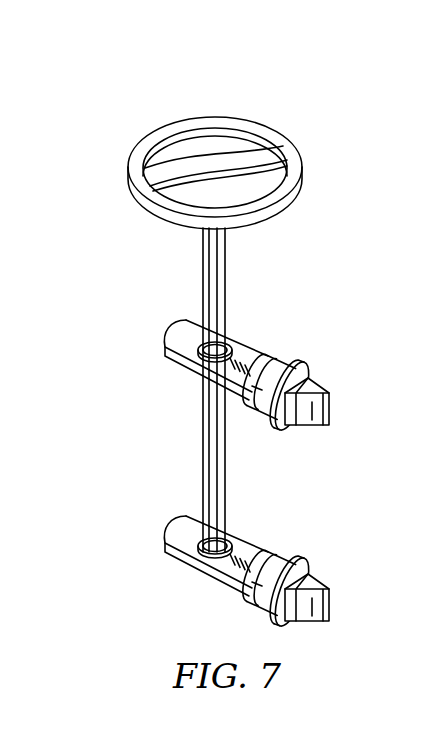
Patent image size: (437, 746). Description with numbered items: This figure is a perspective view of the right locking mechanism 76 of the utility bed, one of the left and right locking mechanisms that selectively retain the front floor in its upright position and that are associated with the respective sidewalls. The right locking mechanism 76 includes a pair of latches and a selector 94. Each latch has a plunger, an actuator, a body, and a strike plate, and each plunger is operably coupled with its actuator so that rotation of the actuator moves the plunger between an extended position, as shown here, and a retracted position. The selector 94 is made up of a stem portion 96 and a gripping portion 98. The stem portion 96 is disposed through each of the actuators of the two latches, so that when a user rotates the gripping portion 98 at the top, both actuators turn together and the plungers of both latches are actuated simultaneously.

The right locking mechanism 76 is at (346, 292).
The selector 94 is at (215, 131).
The stem portion 96 is at (203, 446).
The gripping portion 98 is at (189, 120).